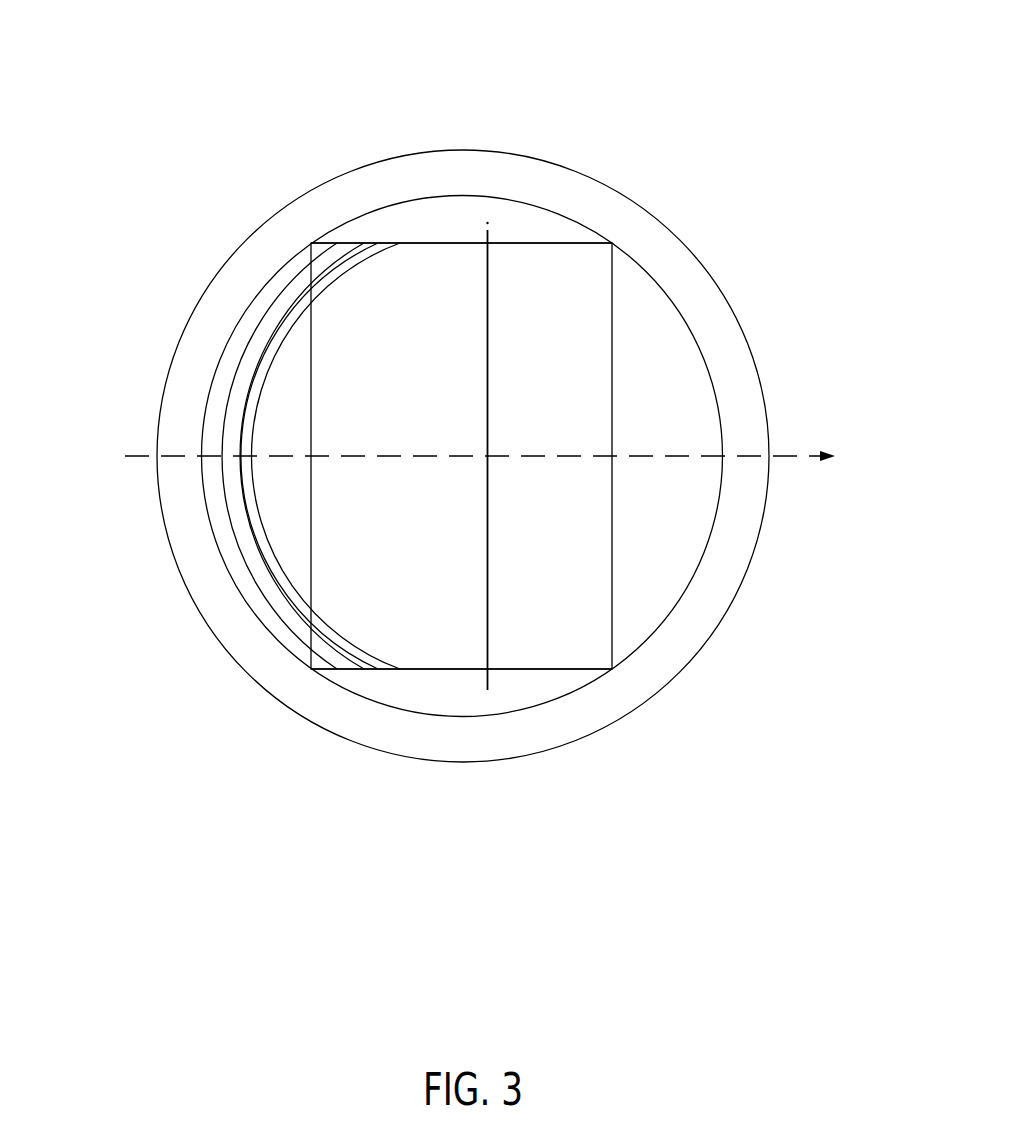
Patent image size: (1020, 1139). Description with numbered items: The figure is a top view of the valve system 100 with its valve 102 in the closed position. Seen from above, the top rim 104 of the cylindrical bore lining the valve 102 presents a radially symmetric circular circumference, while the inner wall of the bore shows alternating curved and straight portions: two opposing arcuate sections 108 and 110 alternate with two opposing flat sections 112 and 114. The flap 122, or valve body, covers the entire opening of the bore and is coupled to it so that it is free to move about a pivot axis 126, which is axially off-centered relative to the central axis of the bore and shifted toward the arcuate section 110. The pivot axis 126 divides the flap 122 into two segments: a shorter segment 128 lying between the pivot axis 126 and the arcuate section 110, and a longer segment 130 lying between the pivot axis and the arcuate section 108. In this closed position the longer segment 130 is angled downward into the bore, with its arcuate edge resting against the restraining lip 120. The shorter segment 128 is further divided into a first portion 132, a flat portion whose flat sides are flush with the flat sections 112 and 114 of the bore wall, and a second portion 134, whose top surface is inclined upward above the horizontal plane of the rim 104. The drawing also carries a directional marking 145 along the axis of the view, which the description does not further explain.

The valve system 100 is at (574, 46).
The valve 102 is at (666, 200).
The top rim 104 is at (738, 533).
The arcuate section 108 is at (222, 378).
The arcuate section 110 is at (687, 590).
The flat section 112 is at (398, 243).
The flat section 114 is at (393, 670).
The restraining lip 120 is at (268, 597).
The flap 122 is at (411, 484).
The pivot axis 126 is at (487, 383).
The shorter segment 128 is at (757, 561).
The longer segment 130 is at (278, 495).
The first portion 132 is at (567, 660).
The second portion 134 is at (680, 397).
The light propagation direction 145 is at (783, 453).